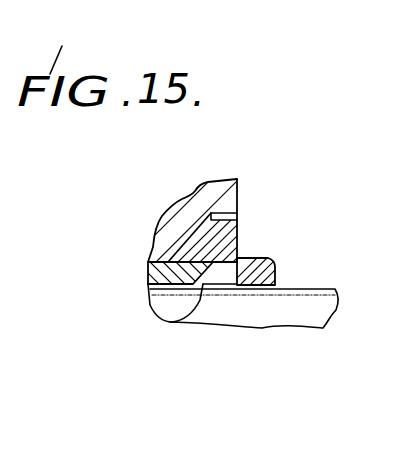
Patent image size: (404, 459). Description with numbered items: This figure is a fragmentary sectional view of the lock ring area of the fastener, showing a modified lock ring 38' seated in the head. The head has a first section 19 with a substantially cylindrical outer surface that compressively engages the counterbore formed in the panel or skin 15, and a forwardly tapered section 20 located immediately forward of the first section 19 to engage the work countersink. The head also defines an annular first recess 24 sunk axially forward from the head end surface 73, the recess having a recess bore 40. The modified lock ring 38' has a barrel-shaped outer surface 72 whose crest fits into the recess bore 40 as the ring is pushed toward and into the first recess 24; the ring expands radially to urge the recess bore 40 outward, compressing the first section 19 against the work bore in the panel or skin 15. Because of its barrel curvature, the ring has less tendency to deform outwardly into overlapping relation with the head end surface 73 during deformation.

The panel or skin 15 is at (180, 205).
The first section 19 is at (238, 195).
The forwardly tapered section 20 is at (200, 240).
The first recess 24 is at (170, 322).
The recess bore 40 is at (224, 262).
The barrel-shaped outer surface 72 is at (262, 258).
The head end surface 73 is at (238, 248).
The modified lock ring 38' is at (269, 290).